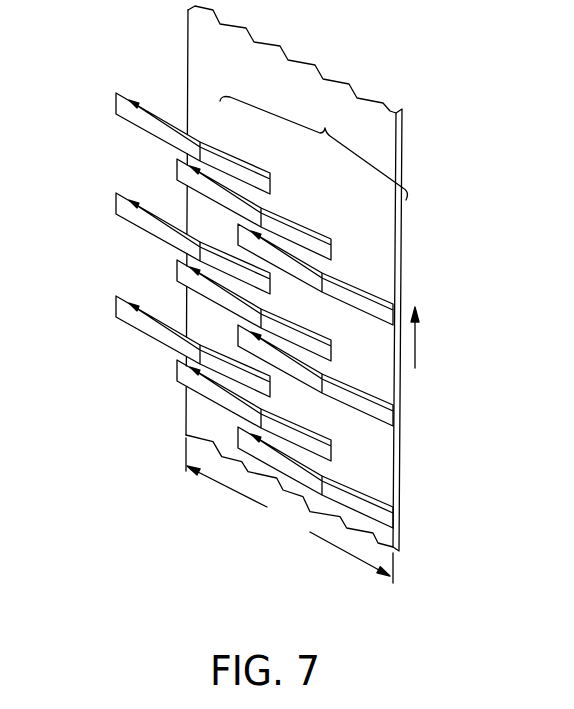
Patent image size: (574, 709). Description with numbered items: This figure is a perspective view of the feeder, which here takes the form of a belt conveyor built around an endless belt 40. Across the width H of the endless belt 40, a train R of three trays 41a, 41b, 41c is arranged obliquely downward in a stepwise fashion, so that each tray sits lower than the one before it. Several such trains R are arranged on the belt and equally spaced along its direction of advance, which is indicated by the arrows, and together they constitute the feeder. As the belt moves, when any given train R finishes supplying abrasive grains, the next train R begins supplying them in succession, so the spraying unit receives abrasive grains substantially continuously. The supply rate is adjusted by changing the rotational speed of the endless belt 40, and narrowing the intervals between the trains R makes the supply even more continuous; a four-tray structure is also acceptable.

The endless belt 40 is at (191, 421).
The tray 41a is at (196, 137).
The tray 41b is at (287, 218).
The tray 41c is at (348, 282).
The train of trays R is at (313, 149).
The width of the endless belt H is at (289, 510).